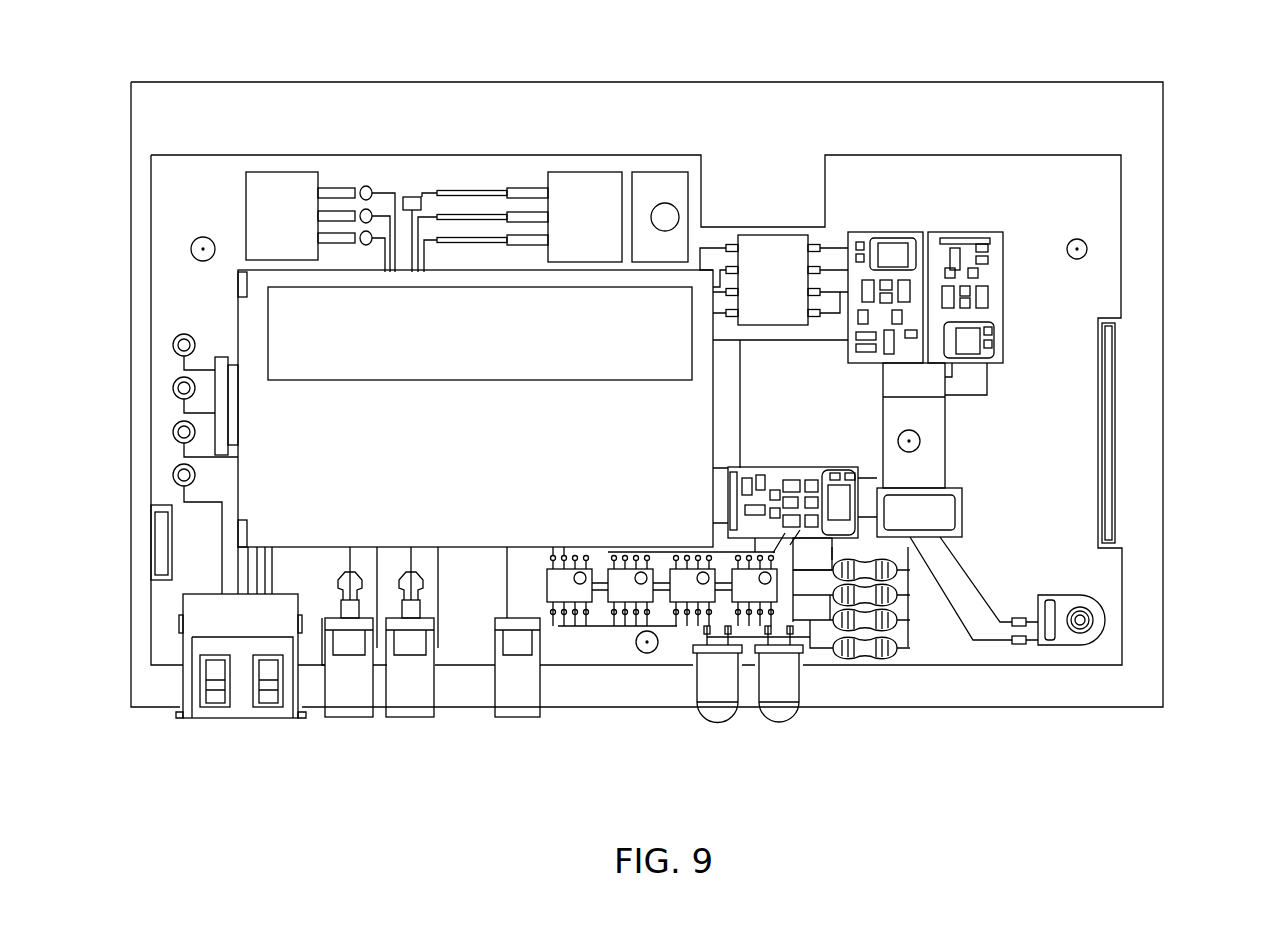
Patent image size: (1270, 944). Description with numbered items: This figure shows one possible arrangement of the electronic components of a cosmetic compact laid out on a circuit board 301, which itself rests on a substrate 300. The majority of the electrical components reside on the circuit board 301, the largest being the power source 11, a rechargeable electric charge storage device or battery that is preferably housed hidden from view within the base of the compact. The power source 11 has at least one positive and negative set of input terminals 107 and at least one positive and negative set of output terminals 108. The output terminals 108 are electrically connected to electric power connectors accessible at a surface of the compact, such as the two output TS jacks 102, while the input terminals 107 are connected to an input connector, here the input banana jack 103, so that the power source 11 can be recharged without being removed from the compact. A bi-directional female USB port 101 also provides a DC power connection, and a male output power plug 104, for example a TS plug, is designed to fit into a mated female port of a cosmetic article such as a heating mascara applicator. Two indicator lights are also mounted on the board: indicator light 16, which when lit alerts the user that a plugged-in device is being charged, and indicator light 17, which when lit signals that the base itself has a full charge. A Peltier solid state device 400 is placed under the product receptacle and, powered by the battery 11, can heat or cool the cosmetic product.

The substrate 300 is at (1145, 122).
The circuit board 301 is at (1102, 287).
The power source 11 is at (474, 421).
The Peltier solid state device 400 is at (357, 341).
The bi-directional female USB port 101 is at (238, 705).
The output TS jacks 102 is at (352, 710).
The input banana jack 103 is at (515, 710).
The male output power plug 104 is at (1095, 625).
The input terminals 107 is at (540, 565).
The output terminals 108 is at (373, 565).
The indicator light 16 is at (710, 713).
The indicator light 17 is at (790, 713).